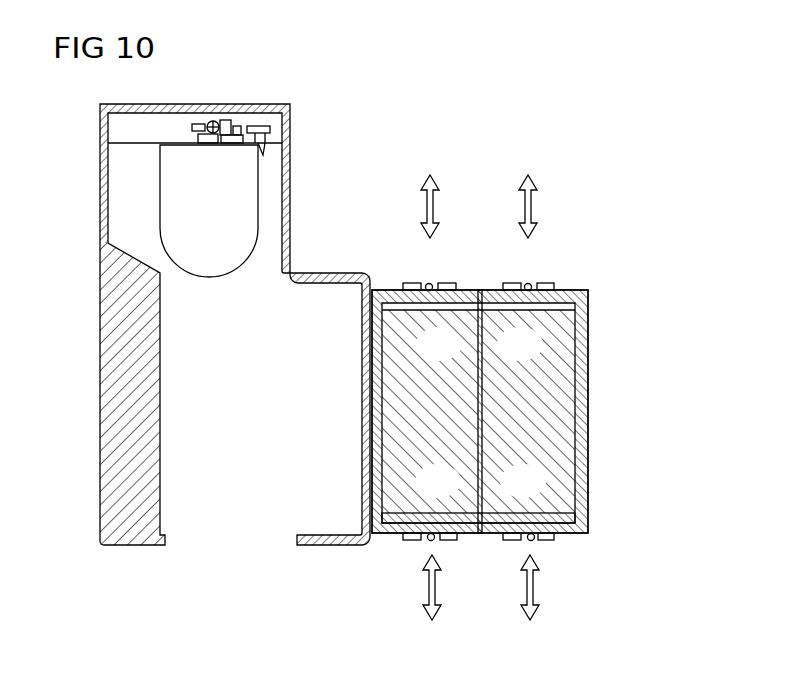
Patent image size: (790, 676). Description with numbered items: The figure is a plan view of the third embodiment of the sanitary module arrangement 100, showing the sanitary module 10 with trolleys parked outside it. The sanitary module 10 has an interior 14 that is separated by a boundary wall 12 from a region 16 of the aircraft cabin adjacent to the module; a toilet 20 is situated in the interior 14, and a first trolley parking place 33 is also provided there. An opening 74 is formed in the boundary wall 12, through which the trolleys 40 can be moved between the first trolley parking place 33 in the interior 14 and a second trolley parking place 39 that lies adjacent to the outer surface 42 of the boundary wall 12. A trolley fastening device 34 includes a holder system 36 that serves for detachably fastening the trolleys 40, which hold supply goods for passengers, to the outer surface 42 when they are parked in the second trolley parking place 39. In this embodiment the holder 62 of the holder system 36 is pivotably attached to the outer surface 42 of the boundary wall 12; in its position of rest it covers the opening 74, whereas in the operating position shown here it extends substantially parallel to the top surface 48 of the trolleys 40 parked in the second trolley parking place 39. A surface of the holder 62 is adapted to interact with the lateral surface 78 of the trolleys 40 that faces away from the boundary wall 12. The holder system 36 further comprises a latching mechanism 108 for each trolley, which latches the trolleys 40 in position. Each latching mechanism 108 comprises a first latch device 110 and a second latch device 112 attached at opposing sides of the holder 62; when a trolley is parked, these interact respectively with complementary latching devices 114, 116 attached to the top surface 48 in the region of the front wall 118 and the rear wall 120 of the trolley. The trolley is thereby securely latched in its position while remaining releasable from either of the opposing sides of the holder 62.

The sanitary module 10 is at (255, 309).
The boundary wall 12 is at (290, 183).
The interior 14 is at (118, 222).
The region of the aircraft cabin 16 is at (420, 128).
The toilet 20 is at (212, 267).
The first trolley parking place 33 is at (262, 527).
The trolley fastening device 34 is at (435, 160).
The holder system 36 is at (501, 414).
The second trolley parking place 39 is at (417, 578).
The trolley 40 is at (437, 446).
The outer surface 42 is at (367, 278).
The top surface 48 is at (586, 341).
The holder 62 is at (578, 377).
The opening 74 is at (380, 535).
The lateral surface 78 is at (588, 412).
The sanitary module arrangement 100 is at (466, 360).
The latching mechanism 108 is at (448, 253).
The first latch device 110 is at (367, 520).
The second latch device 112 is at (438, 305).
The complementary latching device 114 is at (437, 515).
The complementary latching device 116 is at (540, 283).
The front wall 118 is at (562, 540).
The rear wall 120 is at (567, 287).